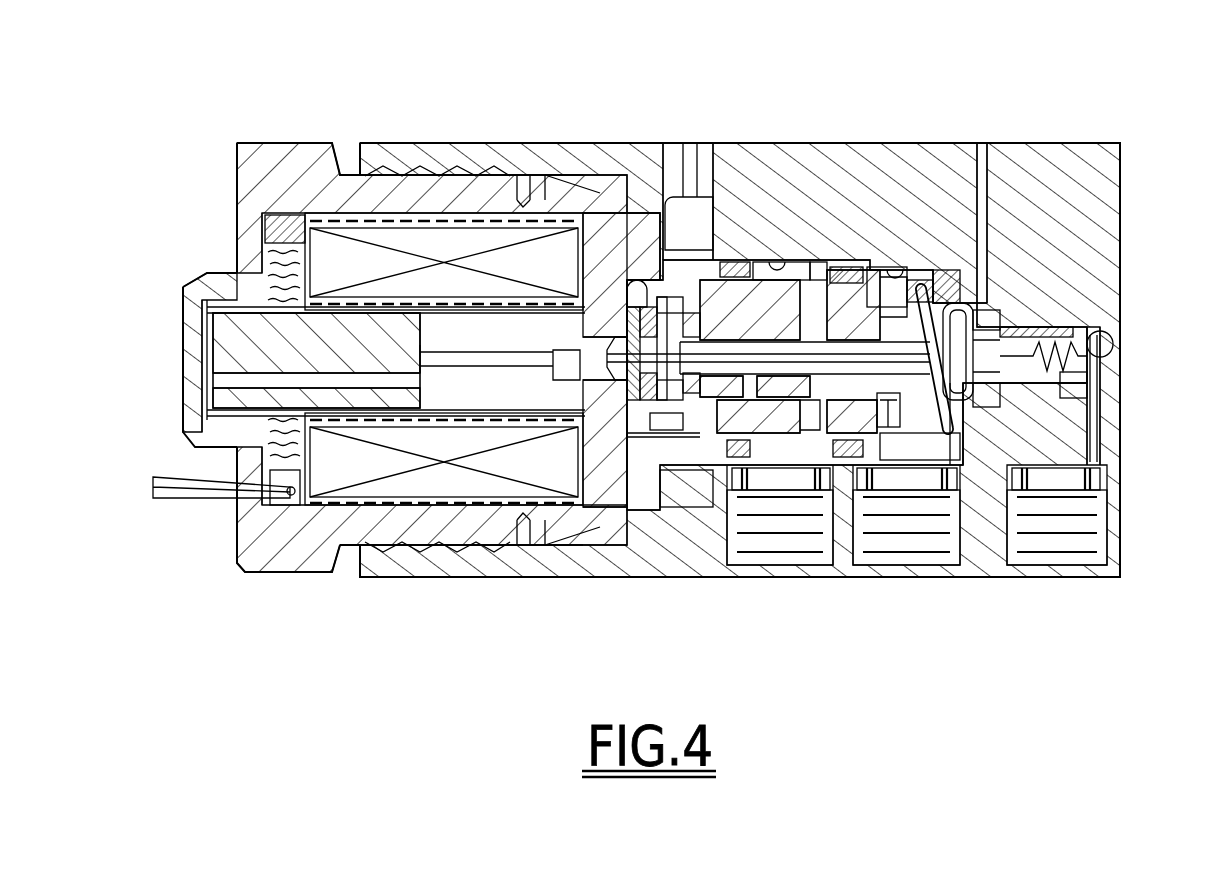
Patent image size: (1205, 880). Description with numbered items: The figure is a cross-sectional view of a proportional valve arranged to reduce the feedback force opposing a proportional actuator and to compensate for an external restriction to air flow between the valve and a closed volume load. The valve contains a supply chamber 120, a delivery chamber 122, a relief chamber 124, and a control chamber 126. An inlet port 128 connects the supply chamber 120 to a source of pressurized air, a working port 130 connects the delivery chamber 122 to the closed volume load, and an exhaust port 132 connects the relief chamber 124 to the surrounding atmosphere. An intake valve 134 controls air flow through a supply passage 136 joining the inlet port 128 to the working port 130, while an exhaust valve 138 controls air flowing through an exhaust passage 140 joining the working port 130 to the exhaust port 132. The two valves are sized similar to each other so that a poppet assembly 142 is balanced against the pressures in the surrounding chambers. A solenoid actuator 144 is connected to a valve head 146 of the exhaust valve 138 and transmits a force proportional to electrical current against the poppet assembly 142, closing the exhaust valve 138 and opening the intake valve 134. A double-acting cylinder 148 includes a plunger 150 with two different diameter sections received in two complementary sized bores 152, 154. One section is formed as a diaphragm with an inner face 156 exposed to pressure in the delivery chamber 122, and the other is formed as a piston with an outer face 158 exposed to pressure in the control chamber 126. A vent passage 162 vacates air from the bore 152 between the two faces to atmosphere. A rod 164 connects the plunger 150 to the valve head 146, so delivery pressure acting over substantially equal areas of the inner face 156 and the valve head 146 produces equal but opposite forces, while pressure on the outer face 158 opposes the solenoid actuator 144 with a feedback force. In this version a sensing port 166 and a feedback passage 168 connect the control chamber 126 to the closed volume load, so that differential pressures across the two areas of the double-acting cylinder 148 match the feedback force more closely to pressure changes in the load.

The supply chamber 120 is at (788, 262).
The delivery chamber 122 is at (905, 272).
The relief chamber 124 is at (674, 510).
The control chamber 126 is at (1078, 383).
The inlet port 128 is at (815, 452).
The working port 130 is at (860, 560).
The exhaust port 132 is at (697, 215).
The intake valve 134 is at (958, 285).
The supply passage 136 is at (832, 372).
The exhaust valve 138 is at (648, 420).
The exhaust passage 140 is at (675, 240).
The poppet assembly 142 is at (822, 265).
The solenoid actuator 144 is at (212, 305).
The valve head 146 is at (652, 300).
The double-acting cylinder 148 is at (1018, 398).
The plunger 150 is at (1042, 328).
The bore 152 is at (980, 390).
The bore 154 is at (1068, 325).
The inner face 156 is at (932, 362).
The outer face 158 is at (1114, 349).
The vent passage 162 is at (985, 150).
The rod 164 is at (852, 430).
The sensing port 166 is at (1100, 552).
The feedback passage 168 is at (1097, 452).